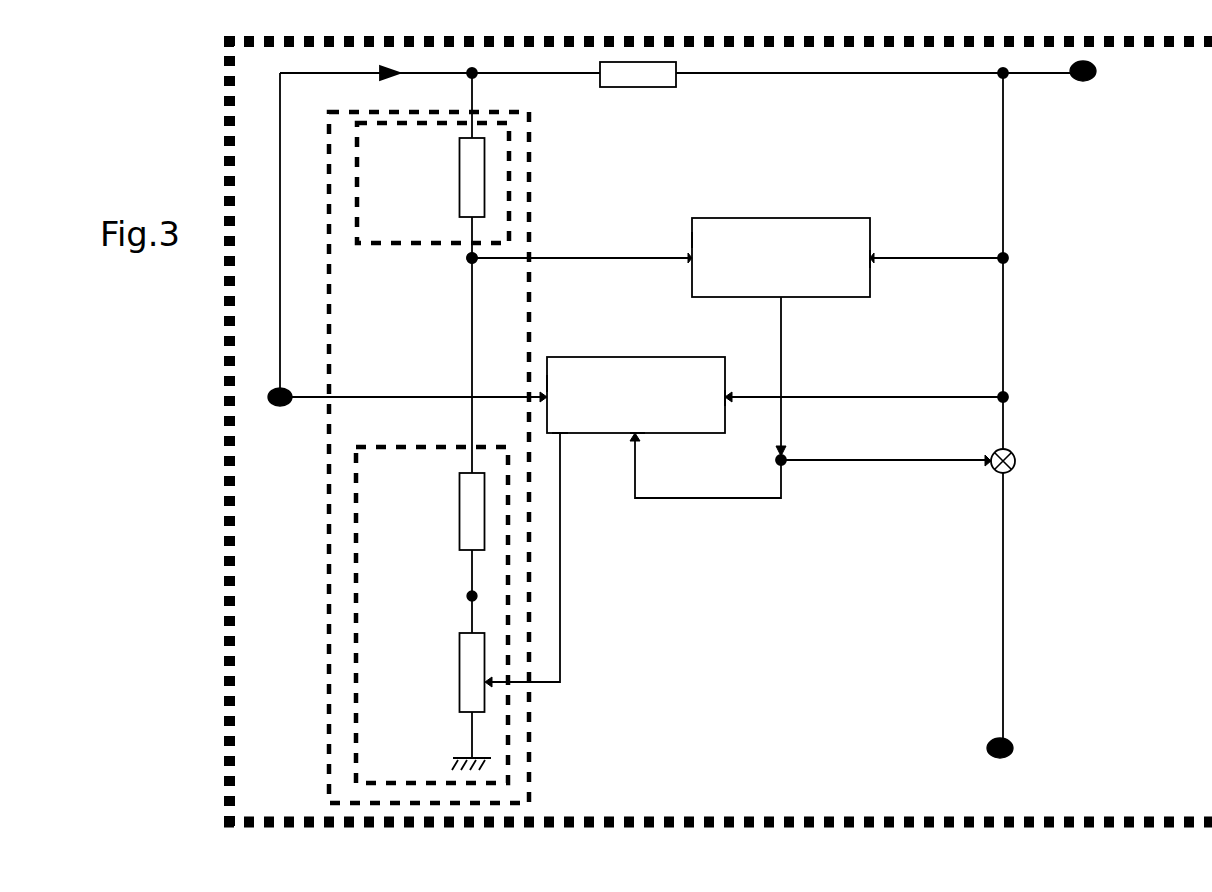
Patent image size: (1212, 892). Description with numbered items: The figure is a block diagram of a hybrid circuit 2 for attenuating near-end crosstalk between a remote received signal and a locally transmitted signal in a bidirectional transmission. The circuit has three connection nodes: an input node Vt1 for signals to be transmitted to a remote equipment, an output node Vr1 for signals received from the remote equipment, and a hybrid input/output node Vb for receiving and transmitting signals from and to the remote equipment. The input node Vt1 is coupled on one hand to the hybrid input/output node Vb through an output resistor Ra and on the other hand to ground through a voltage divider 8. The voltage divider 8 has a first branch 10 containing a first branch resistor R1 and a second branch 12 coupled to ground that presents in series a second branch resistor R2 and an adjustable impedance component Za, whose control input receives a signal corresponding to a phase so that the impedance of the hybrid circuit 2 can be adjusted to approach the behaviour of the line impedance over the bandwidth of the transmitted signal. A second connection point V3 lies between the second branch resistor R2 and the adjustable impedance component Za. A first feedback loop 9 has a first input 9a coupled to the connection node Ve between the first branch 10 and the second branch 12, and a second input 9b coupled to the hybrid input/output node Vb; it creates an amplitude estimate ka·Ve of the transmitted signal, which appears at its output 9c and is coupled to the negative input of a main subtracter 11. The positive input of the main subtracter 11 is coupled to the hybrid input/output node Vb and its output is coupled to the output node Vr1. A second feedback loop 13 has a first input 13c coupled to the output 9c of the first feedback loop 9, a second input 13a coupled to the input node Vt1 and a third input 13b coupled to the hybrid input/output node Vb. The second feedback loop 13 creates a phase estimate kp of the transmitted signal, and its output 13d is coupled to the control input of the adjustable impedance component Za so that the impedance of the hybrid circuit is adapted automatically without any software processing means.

The hybrid circuit 2 is at (1211, 262).
The voltage divider 8 is at (329, 716).
The first feedback loop 9 is at (843, 226).
The first input of first feedback loop 9a is at (692, 246).
The second input of first feedback loop 9b is at (876, 268).
The output of first feedback loop 9c is at (786, 302).
The first branch 10 is at (388, 244).
The main subtracter 11 is at (1016, 457).
The second branch 12 is at (356, 628).
The second feedback loop 13 is at (602, 366).
The second input of second feedback loop 13a is at (545, 386).
The third input of second feedback loop 13b is at (731, 398).
The first input of second feedback loop 13c is at (641, 432).
The output of second feedback loop 13d is at (560, 440).
The first branch resistor R1 is at (466, 184).
The second branch resistor R2 is at (466, 519).
The output resistor Ra is at (620, 90).
The adjustable impedance component Za is at (466, 689).
The connection node Ve is at (467, 259).
The second connection point V3 is at (466, 597).
The input node Vt1 is at (280, 407).
The hybrid input/output node Vb is at (1083, 84).
The output node Vr1 is at (990, 752).
The phase estimate kp is at (540, 564).